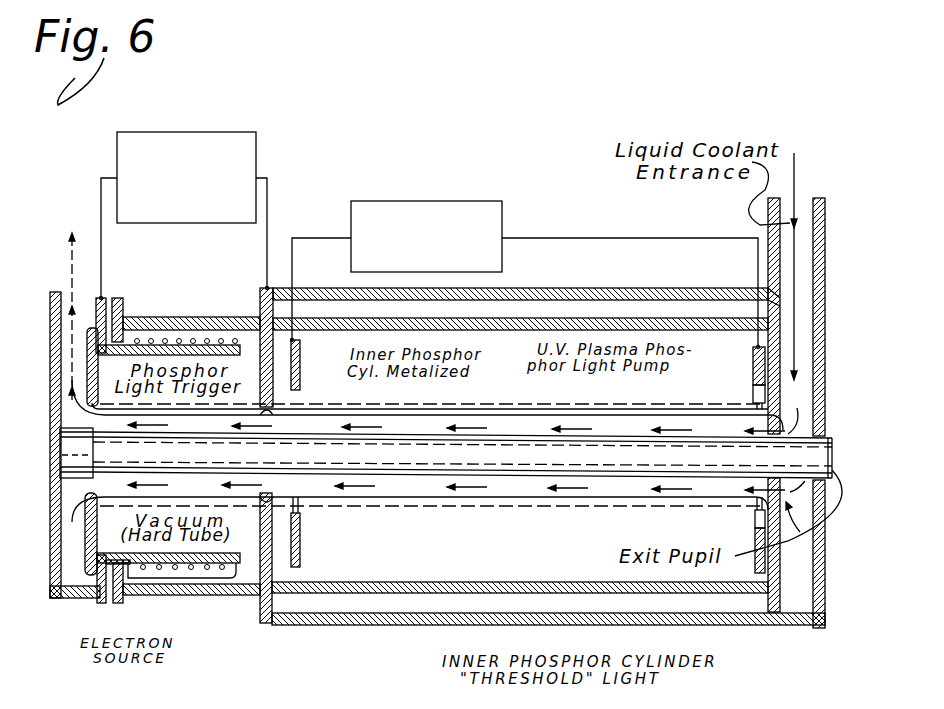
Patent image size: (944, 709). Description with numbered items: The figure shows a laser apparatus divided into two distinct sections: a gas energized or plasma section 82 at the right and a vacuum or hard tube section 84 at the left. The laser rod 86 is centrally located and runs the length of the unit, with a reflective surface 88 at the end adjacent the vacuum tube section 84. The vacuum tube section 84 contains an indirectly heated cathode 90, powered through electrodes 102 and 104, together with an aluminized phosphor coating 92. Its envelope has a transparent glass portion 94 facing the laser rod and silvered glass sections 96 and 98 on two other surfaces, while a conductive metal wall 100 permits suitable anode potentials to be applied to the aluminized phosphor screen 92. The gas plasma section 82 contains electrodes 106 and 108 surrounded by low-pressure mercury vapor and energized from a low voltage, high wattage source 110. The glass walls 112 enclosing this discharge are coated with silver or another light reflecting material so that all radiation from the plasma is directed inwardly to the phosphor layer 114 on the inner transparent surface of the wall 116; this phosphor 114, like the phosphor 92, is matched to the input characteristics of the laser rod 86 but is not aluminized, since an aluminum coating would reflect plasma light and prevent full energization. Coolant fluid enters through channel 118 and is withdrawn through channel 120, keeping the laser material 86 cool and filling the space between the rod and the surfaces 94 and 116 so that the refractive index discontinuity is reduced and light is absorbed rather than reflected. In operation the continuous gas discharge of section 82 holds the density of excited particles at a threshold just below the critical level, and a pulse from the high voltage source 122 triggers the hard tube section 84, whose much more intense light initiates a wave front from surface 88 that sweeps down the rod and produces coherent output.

The gas energized section 82 is at (402, 626).
The vacuum tube section 84 is at (200, 600).
The laser rod 86 is at (462, 455).
The reflective surface 88 is at (94, 462).
The indirectly heated cathode 90 is at (240, 564).
The aluminized phosphor coating 92 is at (108, 505).
The transparent glass portion 94 is at (110, 483).
The silvered glass section 96 is at (85, 543).
The silvered glass section 98 is at (152, 589).
The conductive metal wall 100 is at (262, 567).
The electrode 102 is at (100, 604).
The electrode 104 is at (118, 604).
The electrode 106 is at (240, 358).
The electrode 108 is at (753, 359).
The low voltage, high wattage source 110 is at (462, 201).
The glass walls 112 is at (782, 332).
The phosphor layer 114 is at (586, 405).
The wall 116 is at (636, 418).
The coolant channel 118 is at (786, 212).
The coolant channel 120 is at (52, 293).
The voltage source 122 is at (258, 140).